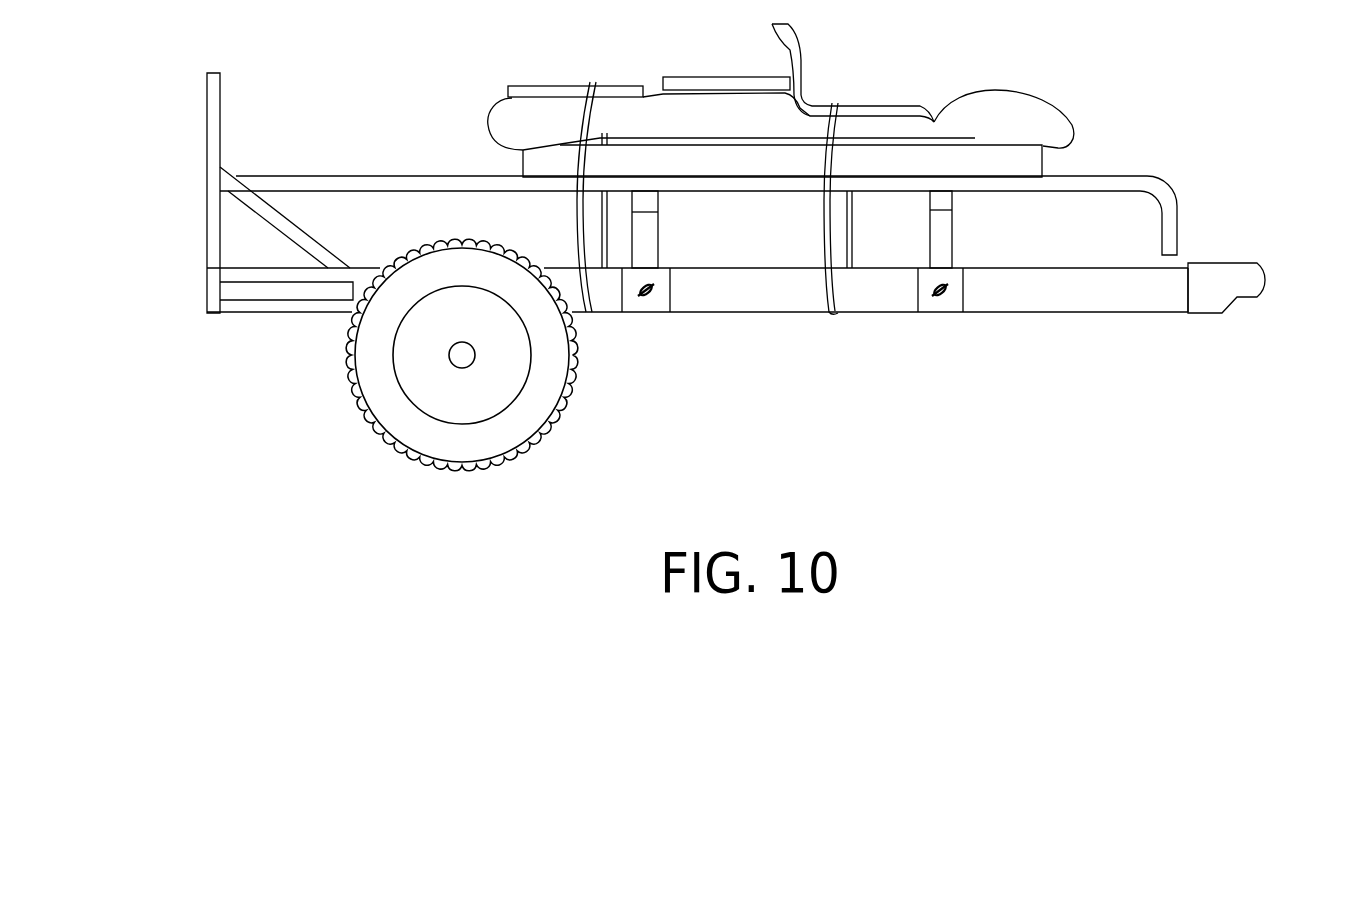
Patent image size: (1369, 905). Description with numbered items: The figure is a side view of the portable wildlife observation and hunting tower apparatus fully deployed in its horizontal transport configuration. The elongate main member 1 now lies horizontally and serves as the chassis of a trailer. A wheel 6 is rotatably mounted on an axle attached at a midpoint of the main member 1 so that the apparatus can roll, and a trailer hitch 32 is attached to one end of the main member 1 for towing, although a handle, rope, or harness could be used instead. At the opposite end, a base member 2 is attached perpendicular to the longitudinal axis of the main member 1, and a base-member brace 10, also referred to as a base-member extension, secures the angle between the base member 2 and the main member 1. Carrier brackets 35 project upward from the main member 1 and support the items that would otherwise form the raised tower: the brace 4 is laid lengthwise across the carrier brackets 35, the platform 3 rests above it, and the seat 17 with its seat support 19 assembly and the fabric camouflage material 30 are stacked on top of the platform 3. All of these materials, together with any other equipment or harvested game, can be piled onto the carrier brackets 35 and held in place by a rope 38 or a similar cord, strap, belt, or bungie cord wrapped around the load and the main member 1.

The main member 1 is at (1110, 312).
The base member 2 is at (208, 113).
The platform 3 is at (1053, 163).
The brace 4 is at (362, 176).
The wheel 6 is at (442, 473).
The base-member brace 10 is at (307, 237).
The seat 17 is at (804, 38).
The seat support 19 is at (722, 77).
The fabric camouflage material 30 is at (1007, 98).
The trailer hitch 32 is at (1273, 276).
The carrier bracket 35 is at (660, 228).
The rope 38 is at (576, 222).